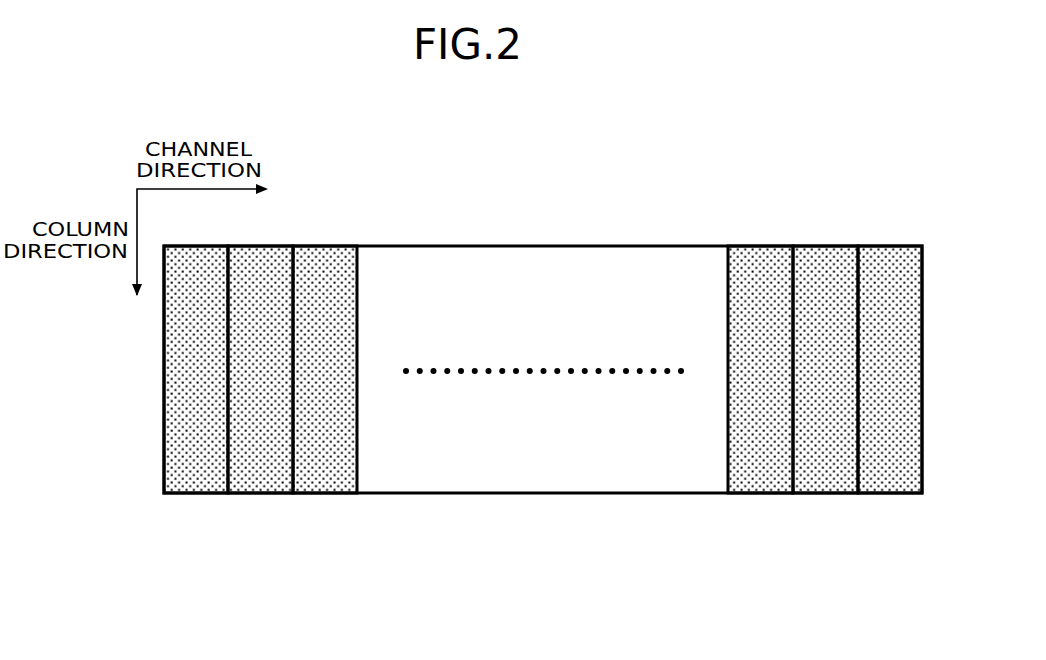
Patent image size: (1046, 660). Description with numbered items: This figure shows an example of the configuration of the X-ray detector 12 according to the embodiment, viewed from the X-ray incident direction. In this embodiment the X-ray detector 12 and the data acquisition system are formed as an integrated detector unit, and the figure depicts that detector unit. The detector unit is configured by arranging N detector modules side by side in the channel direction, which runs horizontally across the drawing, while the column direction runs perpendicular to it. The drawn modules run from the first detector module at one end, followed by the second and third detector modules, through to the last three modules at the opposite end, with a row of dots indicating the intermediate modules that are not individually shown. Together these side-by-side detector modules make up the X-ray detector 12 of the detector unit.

The X-ray detector 12 is at (803, 157).